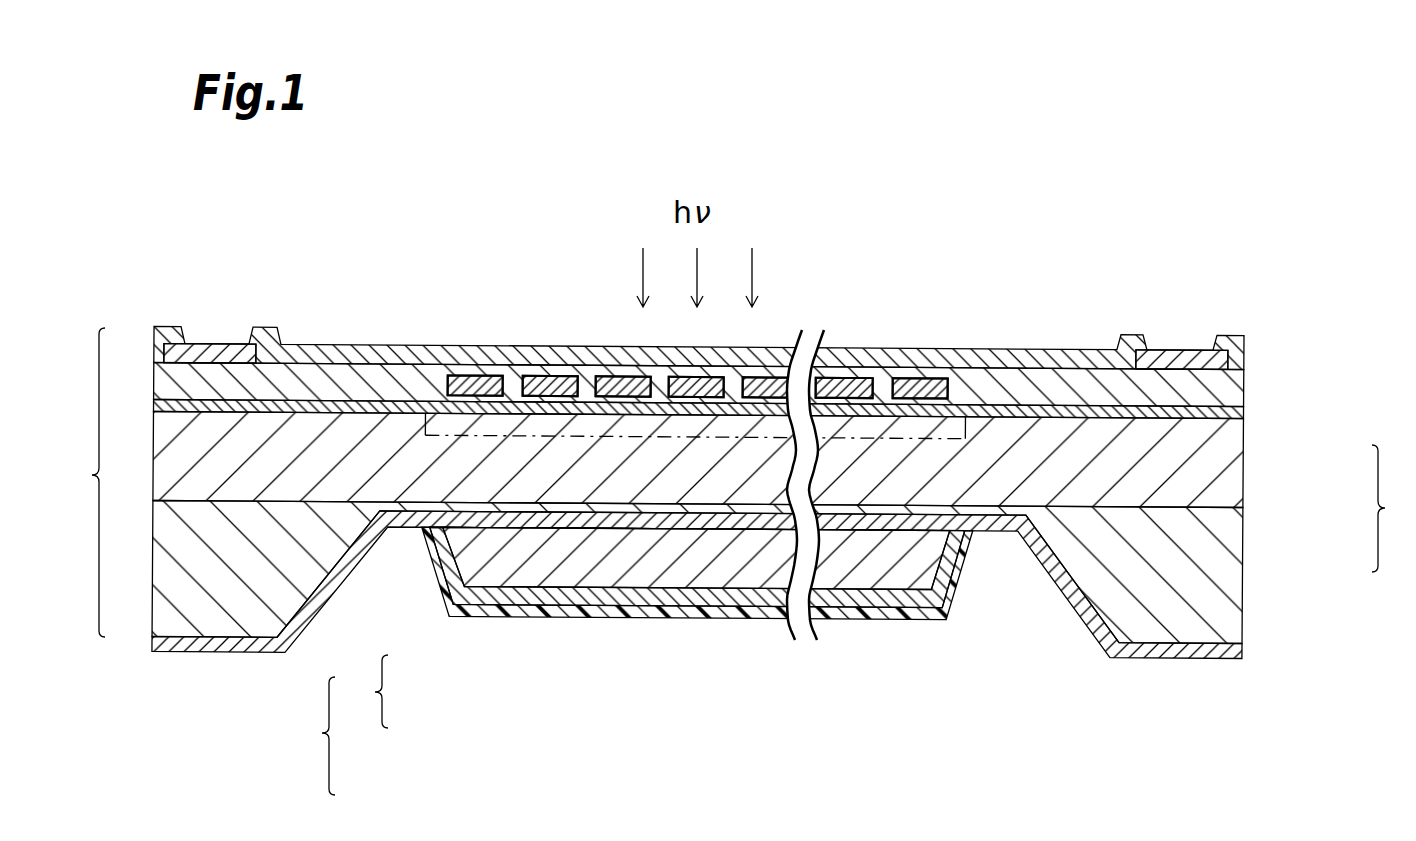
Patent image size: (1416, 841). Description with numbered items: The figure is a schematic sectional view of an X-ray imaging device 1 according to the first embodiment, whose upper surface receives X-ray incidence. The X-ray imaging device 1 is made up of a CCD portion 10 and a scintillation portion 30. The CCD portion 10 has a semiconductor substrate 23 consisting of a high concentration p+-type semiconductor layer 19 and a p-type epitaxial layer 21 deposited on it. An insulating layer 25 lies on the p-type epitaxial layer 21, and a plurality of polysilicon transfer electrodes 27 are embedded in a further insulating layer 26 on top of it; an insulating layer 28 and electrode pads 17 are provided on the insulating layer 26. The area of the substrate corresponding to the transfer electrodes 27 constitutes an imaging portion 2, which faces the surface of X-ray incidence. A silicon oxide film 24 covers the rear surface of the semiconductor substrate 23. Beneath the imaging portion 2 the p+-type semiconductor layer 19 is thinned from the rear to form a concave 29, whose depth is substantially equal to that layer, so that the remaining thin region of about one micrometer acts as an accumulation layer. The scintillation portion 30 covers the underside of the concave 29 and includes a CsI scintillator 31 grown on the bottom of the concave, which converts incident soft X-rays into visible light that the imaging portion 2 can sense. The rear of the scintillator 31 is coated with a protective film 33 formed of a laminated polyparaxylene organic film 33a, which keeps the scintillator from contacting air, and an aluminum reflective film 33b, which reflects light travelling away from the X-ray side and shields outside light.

The X-ray imaging device 1 is at (1110, 195).
The imaging portion 2 is at (893, 442).
The CCD portion 10 is at (80, 482).
The electrode pads 17 is at (218, 348).
The p+-type semiconductor layer 19 is at (1220, 560).
The p-type epitaxial layer 21 is at (1220, 463).
The semiconductor substrate 23 is at (1394, 508).
The silicon oxide film 24 is at (1178, 655).
The insulating layer 25 is at (1218, 412).
The insulating layer 26 is at (1228, 383).
The transfer electrodes 27 is at (620, 375).
The insulating layer 28 is at (1046, 362).
The concave 29 is at (885, 662).
The scintillation portion 30 is at (309, 736).
The scintillator 31 is at (700, 588).
The protective film 33 is at (363, 691).
The organic film 33a is at (530, 612).
The reflective film 33b is at (620, 607).